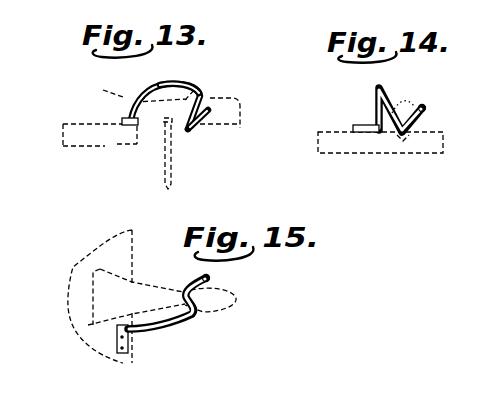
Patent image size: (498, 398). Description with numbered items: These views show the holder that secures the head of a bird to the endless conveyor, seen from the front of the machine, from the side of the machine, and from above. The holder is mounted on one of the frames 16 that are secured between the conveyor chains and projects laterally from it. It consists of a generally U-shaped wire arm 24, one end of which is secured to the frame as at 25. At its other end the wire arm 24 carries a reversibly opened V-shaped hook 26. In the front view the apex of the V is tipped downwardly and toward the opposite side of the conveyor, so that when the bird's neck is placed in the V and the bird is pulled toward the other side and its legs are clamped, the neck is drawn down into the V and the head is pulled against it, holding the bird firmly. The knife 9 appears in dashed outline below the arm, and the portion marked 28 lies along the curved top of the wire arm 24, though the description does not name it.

In FIG. 13, the knife 9 is at (175, 175).
In FIG. 13, the frame 16 is at (72, 147).
In FIG. 14, the frame 16 is at (365, 153).
In FIG. 15, the frame 16 is at (135, 262).
In FIG. 13, the wire arm 24 is at (152, 88).
In FIG. 14, the wire arm 24 is at (391, 74).
In FIG. 15, the wire arm 24 is at (176, 326).
In FIG. 13, the secured end of wire arm 25 is at (128, 127).
In FIG. 14, the secured end of wire arm 25 is at (354, 124).
In FIG. 15, the secured end of wire arm 25 is at (130, 344).
In FIG. 13, the V-shaped hook 26 is at (200, 129).
In FIG. 14, the V-shaped hook 26 is at (424, 112).
In FIG. 15, the V-shaped hook 26 is at (210, 283).
In FIG. 13, the arcuate portion of clip arm 28 is at (200, 90).